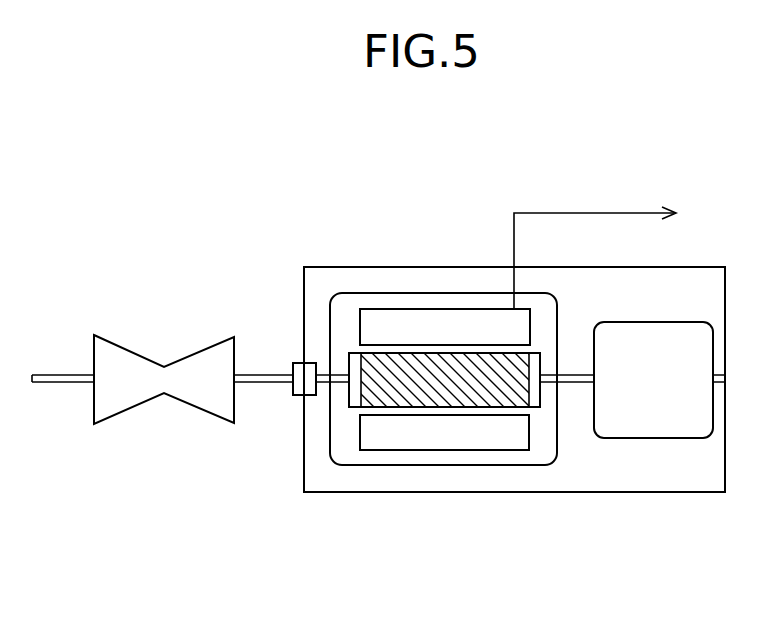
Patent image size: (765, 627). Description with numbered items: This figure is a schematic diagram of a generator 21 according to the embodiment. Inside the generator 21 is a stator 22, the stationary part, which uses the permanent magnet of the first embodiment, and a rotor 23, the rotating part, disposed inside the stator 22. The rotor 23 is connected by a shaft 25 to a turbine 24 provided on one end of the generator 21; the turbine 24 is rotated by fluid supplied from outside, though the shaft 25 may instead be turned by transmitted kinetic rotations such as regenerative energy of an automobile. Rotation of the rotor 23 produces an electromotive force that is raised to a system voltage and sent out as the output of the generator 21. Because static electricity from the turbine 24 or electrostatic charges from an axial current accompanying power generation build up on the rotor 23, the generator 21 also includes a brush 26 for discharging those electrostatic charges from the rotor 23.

The generator 21 is at (350, 267).
The stator 22 is at (413, 442).
The rotor 23 is at (460, 398).
The turbine 24 is at (204, 347).
The shaft 25 is at (270, 386).
The brush 26 is at (645, 424).